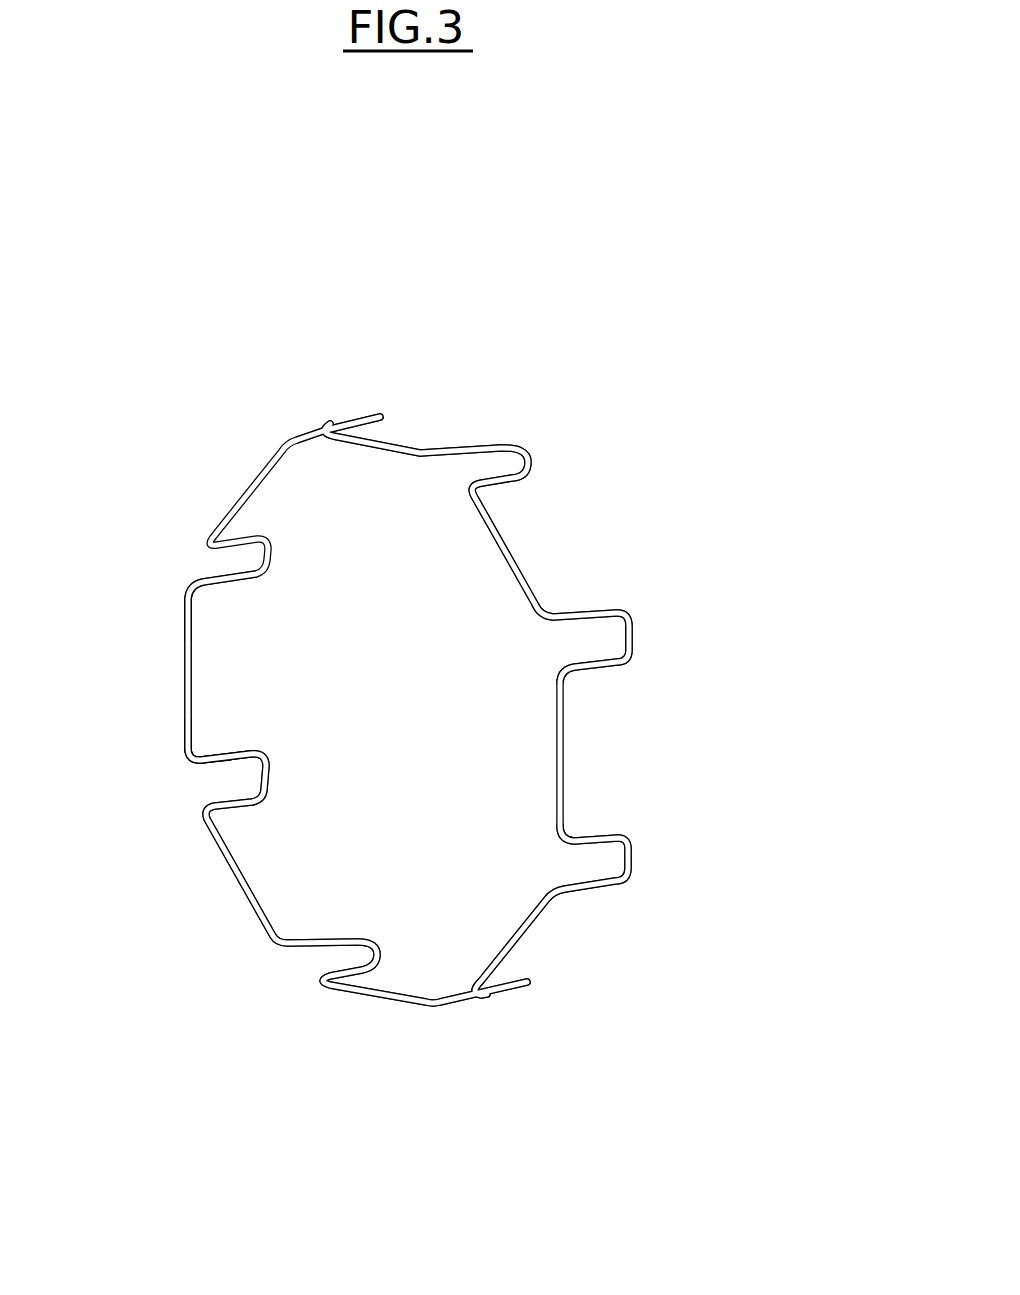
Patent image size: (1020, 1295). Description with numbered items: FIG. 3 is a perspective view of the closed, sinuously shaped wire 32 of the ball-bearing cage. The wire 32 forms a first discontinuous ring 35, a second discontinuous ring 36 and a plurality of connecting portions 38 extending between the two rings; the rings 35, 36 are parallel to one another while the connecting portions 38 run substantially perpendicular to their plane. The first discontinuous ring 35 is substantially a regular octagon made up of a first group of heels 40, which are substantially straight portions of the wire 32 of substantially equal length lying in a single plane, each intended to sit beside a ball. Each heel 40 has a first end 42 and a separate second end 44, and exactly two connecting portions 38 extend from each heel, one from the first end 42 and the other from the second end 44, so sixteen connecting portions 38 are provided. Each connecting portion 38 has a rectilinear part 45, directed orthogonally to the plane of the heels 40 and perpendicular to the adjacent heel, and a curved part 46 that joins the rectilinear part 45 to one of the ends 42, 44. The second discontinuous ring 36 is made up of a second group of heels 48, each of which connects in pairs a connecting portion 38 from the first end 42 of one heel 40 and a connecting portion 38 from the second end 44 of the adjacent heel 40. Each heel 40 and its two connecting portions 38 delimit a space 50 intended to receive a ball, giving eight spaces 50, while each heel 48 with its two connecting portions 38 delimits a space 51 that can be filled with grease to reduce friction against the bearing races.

The wire 32 is at (536, 356).
The first discontinuous ring 35 is at (515, 550).
The second discontinuous ring 36 is at (536, 462).
The connecting portion 38 is at (197, 770).
The heel 40 is at (183, 673).
The first end 42 is at (185, 610).
The second end 44 is at (187, 747).
The rectilinear part 45 is at (238, 775).
The curved part 46 is at (202, 763).
The heel 48 is at (387, 440).
The space 50 is at (284, 892).
The space 51 is at (595, 642).